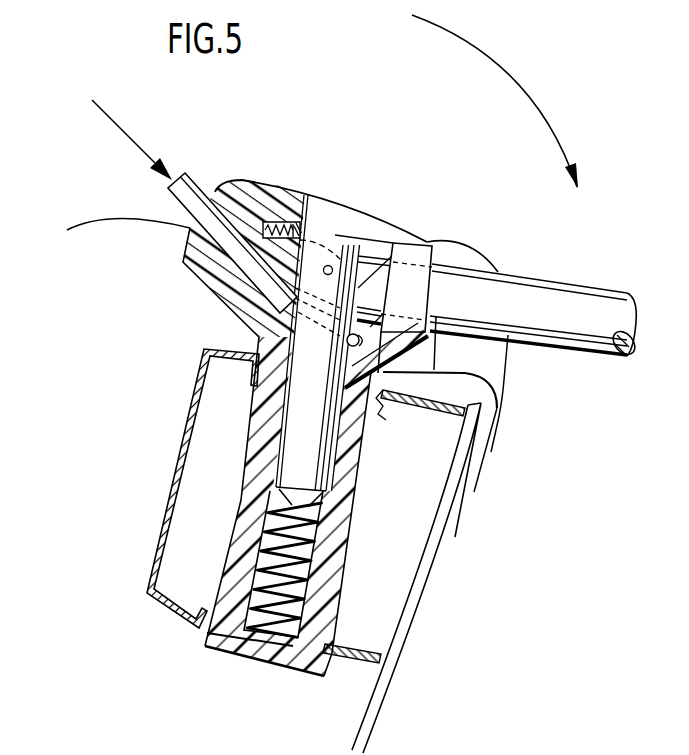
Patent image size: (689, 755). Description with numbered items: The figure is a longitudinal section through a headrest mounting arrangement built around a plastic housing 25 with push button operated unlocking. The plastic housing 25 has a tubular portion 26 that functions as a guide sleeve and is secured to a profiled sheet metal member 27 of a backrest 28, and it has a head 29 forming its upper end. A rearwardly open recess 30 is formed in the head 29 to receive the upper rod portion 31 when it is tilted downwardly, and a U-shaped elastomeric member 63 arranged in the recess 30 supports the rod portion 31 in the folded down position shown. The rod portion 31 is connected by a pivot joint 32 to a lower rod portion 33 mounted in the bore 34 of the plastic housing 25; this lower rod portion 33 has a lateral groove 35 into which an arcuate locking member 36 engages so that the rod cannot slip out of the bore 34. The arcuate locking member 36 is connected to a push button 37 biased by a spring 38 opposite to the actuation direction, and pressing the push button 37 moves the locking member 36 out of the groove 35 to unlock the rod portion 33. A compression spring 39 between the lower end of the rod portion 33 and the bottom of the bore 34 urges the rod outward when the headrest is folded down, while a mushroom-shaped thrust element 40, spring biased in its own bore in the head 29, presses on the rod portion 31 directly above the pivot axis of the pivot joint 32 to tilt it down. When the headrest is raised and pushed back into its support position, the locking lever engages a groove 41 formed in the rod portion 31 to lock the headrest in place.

The plastic housing 25 is at (360, 545).
The tubular portion 26 is at (245, 503).
The profiled sheet metal member 27 is at (195, 395).
The backrest 28 is at (422, 573).
The head 29 is at (220, 284).
The rearwardly open recess 30 is at (370, 220).
The upper rod portion 31 is at (569, 341).
The pivot joint 32 is at (330, 266).
The lower rod portion 33 is at (317, 427).
The bore 34 is at (258, 439).
The lateral groove 35 is at (348, 345).
The arcuate locking member 36 is at (254, 284).
The push button 37 is at (193, 195).
The spring 38 is at (243, 225).
The compression spring 39 is at (299, 589).
The mushroom-shaped thrust element 40 is at (306, 222).
The groove 41 is at (436, 319).
The U-shaped elastomeric member 63 is at (423, 349).